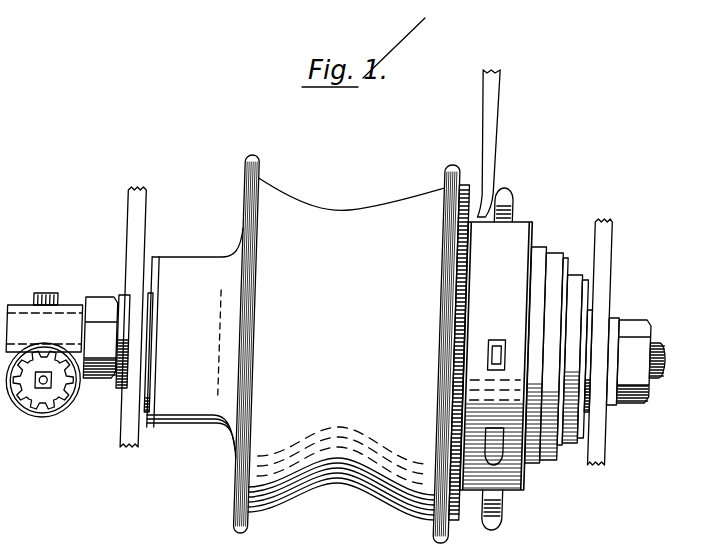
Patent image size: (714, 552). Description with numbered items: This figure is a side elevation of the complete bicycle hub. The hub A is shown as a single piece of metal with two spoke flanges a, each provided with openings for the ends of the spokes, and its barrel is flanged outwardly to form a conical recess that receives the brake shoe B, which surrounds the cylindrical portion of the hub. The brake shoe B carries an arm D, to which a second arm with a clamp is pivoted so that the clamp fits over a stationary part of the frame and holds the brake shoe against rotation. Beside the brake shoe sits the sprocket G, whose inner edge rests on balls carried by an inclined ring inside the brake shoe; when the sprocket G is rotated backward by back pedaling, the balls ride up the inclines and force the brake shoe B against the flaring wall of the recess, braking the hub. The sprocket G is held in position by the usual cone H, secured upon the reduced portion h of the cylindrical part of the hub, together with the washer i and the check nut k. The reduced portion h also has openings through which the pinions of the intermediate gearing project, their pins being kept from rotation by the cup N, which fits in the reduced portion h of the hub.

The hub A is at (333, 215).
The flanges a is at (261, 163).
The arm D is at (490, 133).
The sprocket G is at (516, 227).
The cone H is at (540, 250).
The washer i is at (549, 253).
The check nut k is at (567, 260).
The reduced portion h is at (570, 277).
The cup N is at (157, 266).
The brake shoe B is at (512, 505).